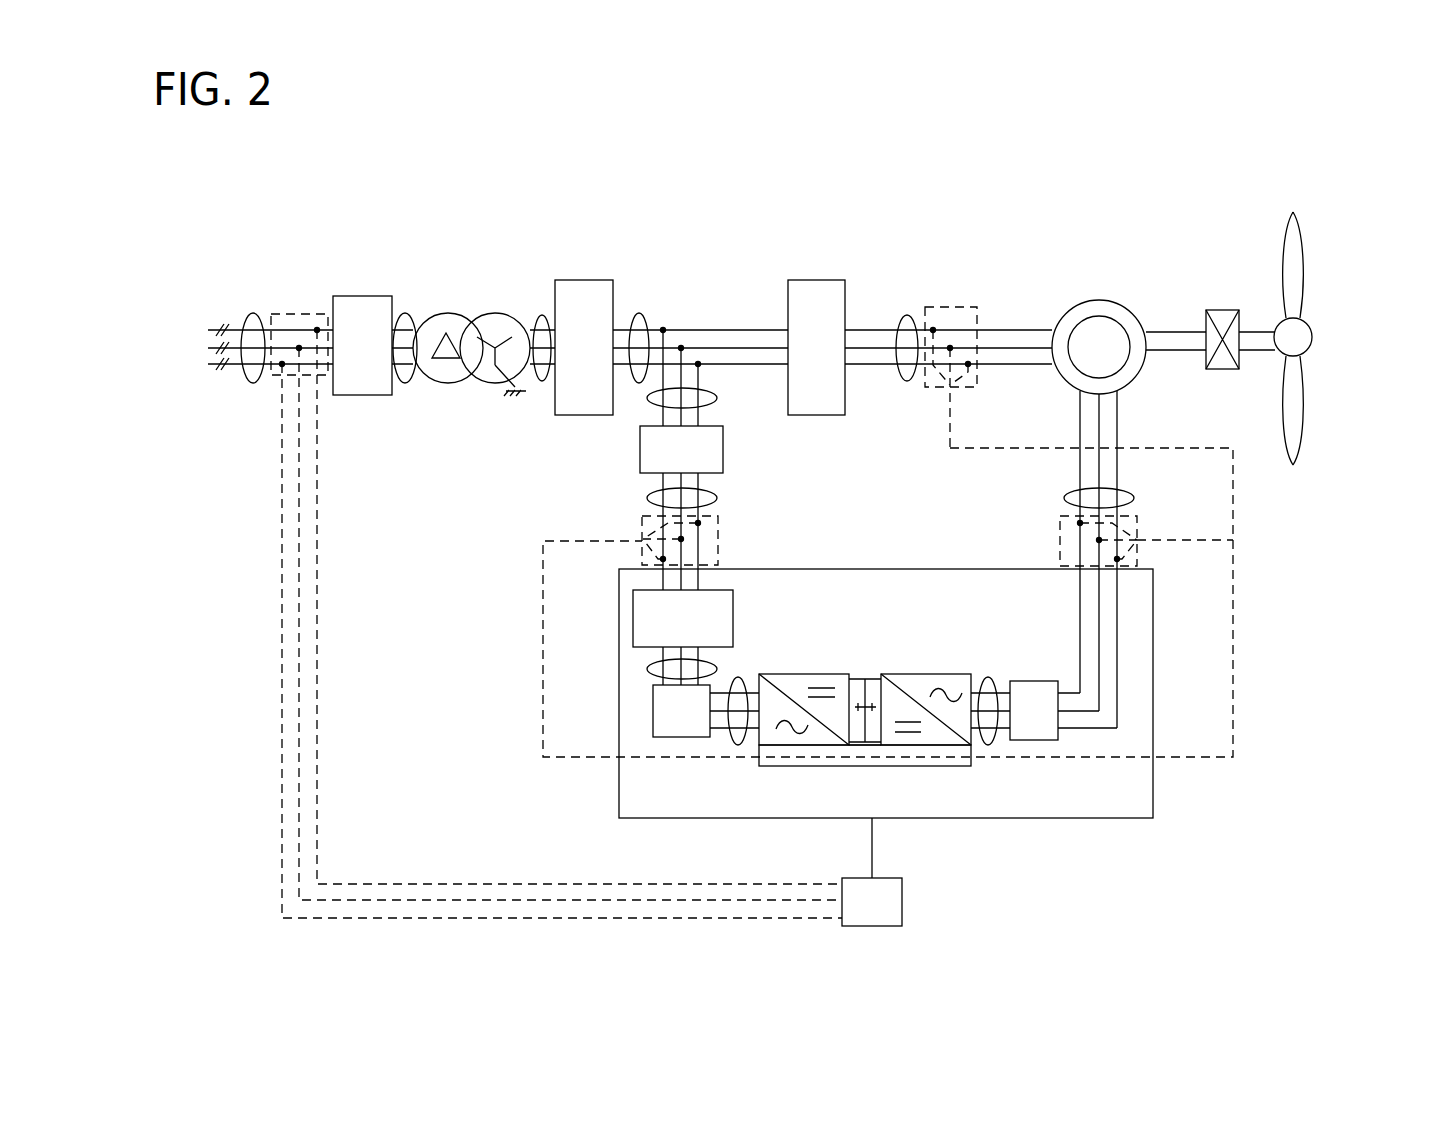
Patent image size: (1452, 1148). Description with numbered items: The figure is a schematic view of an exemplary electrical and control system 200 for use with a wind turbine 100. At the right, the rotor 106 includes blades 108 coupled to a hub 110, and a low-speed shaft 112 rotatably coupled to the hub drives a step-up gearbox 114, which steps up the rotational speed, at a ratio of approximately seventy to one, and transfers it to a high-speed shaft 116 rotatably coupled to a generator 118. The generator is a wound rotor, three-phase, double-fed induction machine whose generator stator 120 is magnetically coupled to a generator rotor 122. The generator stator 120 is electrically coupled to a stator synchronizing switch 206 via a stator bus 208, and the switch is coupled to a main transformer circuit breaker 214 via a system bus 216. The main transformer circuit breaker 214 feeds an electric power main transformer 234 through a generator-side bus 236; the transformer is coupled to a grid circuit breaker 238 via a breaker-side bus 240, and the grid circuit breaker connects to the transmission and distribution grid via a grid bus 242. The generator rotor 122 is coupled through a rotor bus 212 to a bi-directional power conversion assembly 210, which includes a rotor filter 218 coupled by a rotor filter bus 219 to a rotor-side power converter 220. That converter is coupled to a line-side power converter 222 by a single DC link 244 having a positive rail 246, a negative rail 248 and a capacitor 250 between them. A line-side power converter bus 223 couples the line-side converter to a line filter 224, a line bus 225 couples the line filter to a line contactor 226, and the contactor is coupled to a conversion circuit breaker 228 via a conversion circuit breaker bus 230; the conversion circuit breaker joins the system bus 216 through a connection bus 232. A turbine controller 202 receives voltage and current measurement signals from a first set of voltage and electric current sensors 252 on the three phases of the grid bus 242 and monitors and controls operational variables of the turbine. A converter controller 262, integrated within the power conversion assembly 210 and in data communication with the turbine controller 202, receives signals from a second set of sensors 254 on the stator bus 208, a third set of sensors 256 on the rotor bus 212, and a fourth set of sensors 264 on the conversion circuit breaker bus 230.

The wind turbine 100 is at (1344, 306).
The rotor 106 is at (1344, 338).
The blades 108 is at (1318, 316).
The hub 110 is at (1313, 338).
The low-speed shaft 112 is at (1256, 332).
The step-up gearbox 114 is at (1218, 308).
The high-speed shaft 116 is at (1175, 330).
The generator 118 is at (1108, 279).
The generator stator 120 is at (1098, 300).
The generator rotor 122 is at (1092, 325).
The electrical and control system 200 is at (308, 178).
The turbine controller 202 is at (852, 917).
The stator synchronizing switch 206 is at (817, 280).
The stator bus 208 is at (907, 313).
The power conversion assembly 210 is at (1153, 688).
The rotor bus 212 is at (1137, 498).
The main transformer circuit breaker 214 is at (585, 280).
The system bus 216 is at (639, 312).
The rotor filter 218 is at (1030, 690).
The rotor filter bus 219 is at (985, 675).
The rotor-side power converter 220 is at (985, 745).
The line-side power converter 222 is at (759, 745).
The line-side power converter bus 223 is at (745, 680).
The line filter 224 is at (653, 712).
The line bus 225 is at (647, 669).
The line contactor 226 is at (633, 618).
The conversion circuit breaker 228 is at (723, 450).
The conversion circuit breaker bus 230 is at (717, 492).
The connection bus 232 is at (717, 398).
The main transformer 234 is at (495, 313).
The generator-side bus 236 is at (542, 313).
The grid circuit breaker 238 is at (349, 296).
The breaker-side bus 240 is at (405, 312).
The grid bus 242 is at (253, 312).
The DC link 244 is at (848, 632).
The positive rail 246 is at (879, 688).
The negative rail 248 is at (875, 745).
The capacitor 250 is at (862, 703).
The first set of voltage and electric current sensors 252 is at (272, 388).
The second set of voltage and electric current sensors 254 is at (965, 302).
The third set of voltage and electric current sensors 256 is at (1048, 536).
The converter controller 262 is at (927, 757).
The fourth set of voltage and electric current sensors 264 is at (718, 540).